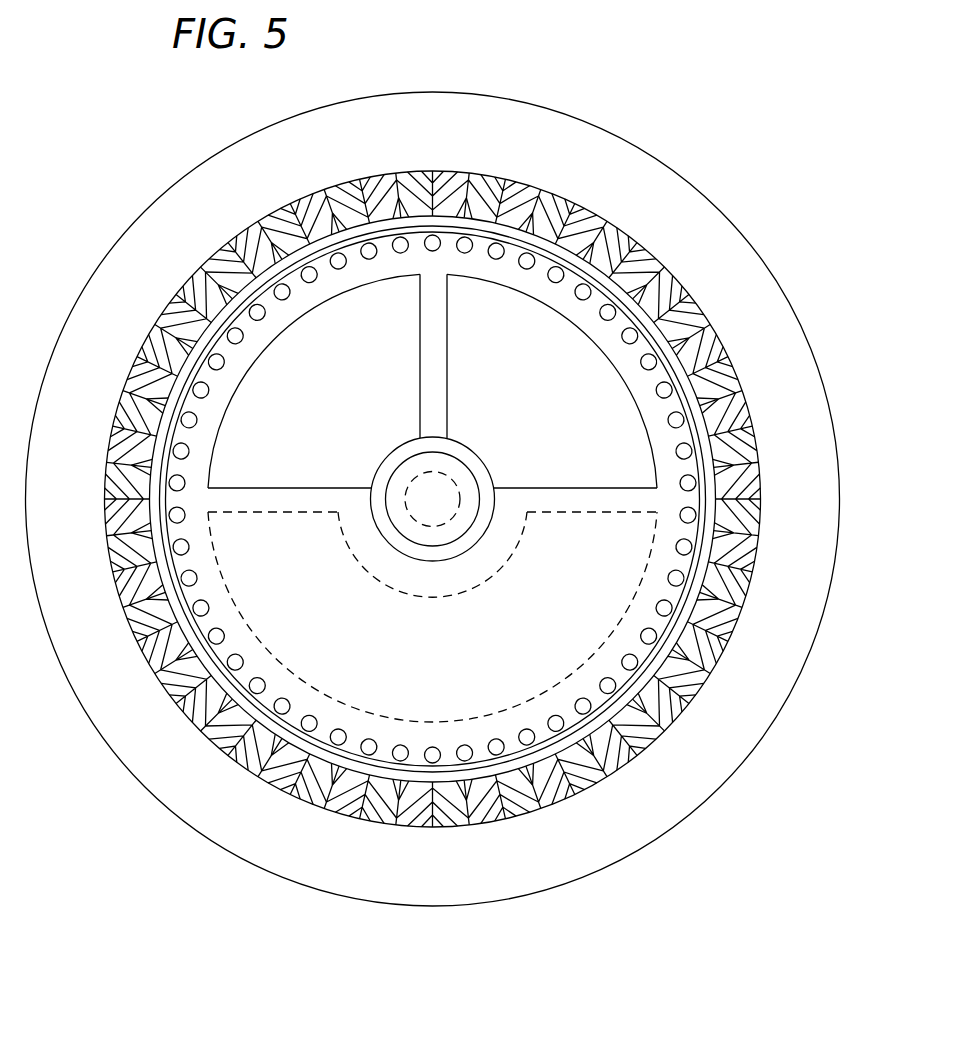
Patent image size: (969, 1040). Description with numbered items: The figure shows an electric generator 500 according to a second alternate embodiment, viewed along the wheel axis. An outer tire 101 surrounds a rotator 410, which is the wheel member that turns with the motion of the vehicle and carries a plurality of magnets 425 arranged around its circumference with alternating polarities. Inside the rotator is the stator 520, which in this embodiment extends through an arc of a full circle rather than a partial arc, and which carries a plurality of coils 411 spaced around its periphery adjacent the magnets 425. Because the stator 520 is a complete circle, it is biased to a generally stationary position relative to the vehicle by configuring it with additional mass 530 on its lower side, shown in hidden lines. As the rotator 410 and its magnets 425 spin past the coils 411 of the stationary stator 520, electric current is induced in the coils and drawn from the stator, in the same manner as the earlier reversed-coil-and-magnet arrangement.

The generator 500 is at (233, 132).
The tire 101 is at (568, 125).
The rotator 410 is at (749, 393).
The magnets 425 is at (660, 276).
The coils 411 is at (607, 321).
The stator 520 is at (613, 377).
The mass 530 is at (259, 508).